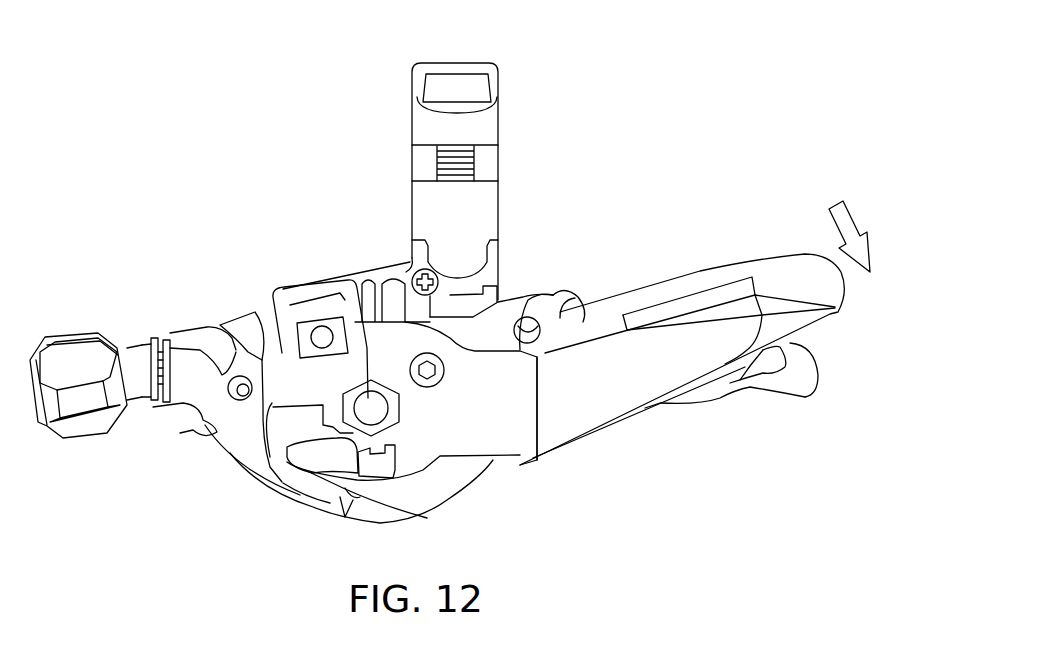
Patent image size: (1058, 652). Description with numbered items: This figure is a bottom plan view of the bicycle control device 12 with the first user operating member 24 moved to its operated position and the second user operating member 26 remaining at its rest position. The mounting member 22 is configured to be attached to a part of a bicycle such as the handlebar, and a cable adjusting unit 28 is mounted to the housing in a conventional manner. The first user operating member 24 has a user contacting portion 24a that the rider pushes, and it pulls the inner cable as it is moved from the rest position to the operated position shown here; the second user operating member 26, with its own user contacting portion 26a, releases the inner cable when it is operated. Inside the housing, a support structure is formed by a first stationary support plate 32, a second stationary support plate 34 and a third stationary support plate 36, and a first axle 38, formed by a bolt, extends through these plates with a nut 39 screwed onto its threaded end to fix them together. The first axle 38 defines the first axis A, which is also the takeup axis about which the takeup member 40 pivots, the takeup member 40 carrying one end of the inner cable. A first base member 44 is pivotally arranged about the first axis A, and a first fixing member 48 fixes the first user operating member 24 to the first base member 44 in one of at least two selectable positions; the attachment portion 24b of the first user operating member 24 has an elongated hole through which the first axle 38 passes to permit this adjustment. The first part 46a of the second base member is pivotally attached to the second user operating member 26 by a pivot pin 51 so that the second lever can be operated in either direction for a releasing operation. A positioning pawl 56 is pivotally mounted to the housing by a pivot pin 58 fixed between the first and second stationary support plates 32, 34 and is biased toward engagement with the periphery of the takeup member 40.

The bicycle control device 12 is at (604, 52).
The mounting member 22 is at (409, 108).
The first user operating member 24 is at (672, 270).
The user contacting portion 24a is at (758, 252).
The attachment portion 24b is at (498, 440).
The second user operating member 26 is at (723, 410).
The user contacting portion 26a is at (787, 392).
The cable adjusting unit 28 is at (68, 328).
The first stationary support plate 32 is at (193, 327).
The second stationary support plate 34 is at (167, 340).
The third stationary support plate 36 is at (366, 298).
The first axle 38 is at (400, 422).
The nut 39 is at (350, 452).
The takeup member 40 is at (378, 528).
The first base member 44 is at (237, 458).
The first part 46a is at (495, 322).
The first fixing member 48 is at (446, 374).
The pivot pin 51 is at (571, 310).
The positioning pawl 56 is at (232, 330).
The pivot pin 58 is at (200, 428).
The first axis A is at (373, 408).